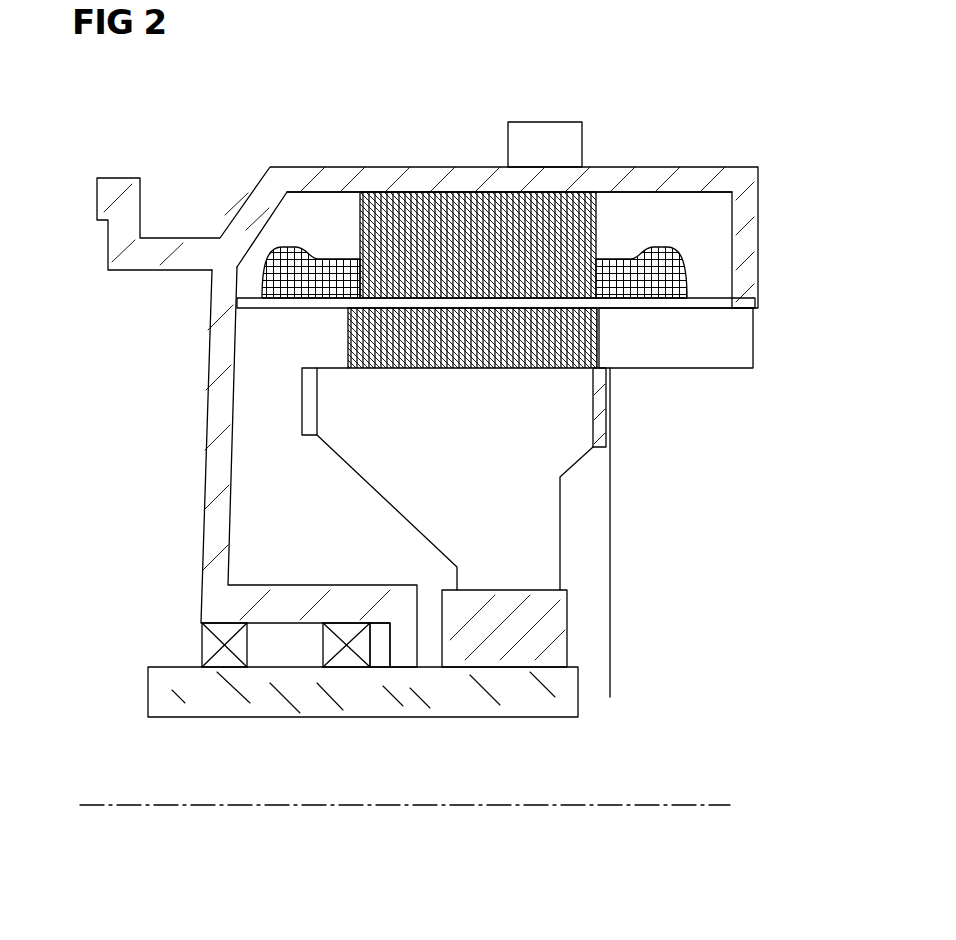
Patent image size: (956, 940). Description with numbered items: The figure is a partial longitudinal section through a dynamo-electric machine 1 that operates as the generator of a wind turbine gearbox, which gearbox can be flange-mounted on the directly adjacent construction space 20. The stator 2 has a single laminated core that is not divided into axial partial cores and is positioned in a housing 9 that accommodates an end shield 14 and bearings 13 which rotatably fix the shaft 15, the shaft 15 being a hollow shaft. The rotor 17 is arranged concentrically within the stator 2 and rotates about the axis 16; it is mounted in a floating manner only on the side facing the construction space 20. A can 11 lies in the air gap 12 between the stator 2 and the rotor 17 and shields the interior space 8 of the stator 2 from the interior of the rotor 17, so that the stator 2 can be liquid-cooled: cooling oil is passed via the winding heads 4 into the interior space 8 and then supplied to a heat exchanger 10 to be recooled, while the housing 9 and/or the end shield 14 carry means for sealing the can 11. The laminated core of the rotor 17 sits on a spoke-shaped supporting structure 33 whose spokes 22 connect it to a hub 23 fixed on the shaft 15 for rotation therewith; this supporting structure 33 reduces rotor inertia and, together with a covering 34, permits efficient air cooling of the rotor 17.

The dynamo-electric machine 1 is at (427, 175).
The stator 2 is at (448, 190).
The winding heads 4 is at (688, 278).
The interior space of the stator 8 is at (313, 210).
The housing 9 is at (398, 190).
The heat exchanger 10 is at (545, 125).
The can 11 is at (715, 306).
The air gap 12 is at (602, 310).
The bearings 13 is at (178, 645).
The end shield 14 is at (222, 360).
The shaft 15 is at (570, 686).
The axis 16 is at (658, 807).
The rotor 17 is at (348, 352).
The construction space 20 is at (138, 446).
The spokes 22 is at (543, 513).
The hub 23 is at (567, 632).
The supporting structure 33 is at (300, 418).
The covering 34 is at (612, 478).